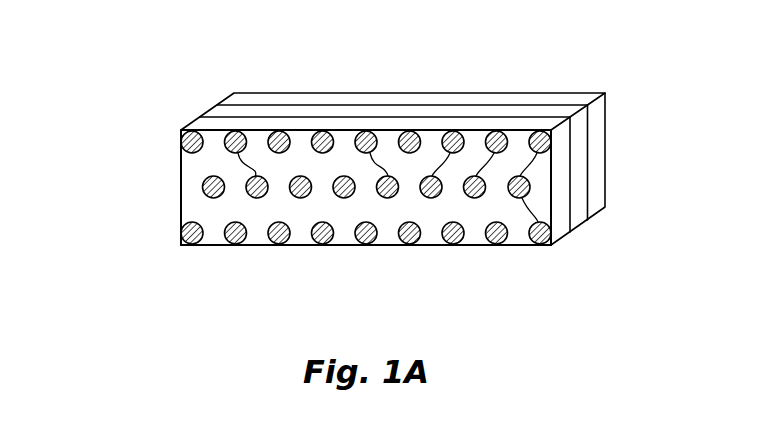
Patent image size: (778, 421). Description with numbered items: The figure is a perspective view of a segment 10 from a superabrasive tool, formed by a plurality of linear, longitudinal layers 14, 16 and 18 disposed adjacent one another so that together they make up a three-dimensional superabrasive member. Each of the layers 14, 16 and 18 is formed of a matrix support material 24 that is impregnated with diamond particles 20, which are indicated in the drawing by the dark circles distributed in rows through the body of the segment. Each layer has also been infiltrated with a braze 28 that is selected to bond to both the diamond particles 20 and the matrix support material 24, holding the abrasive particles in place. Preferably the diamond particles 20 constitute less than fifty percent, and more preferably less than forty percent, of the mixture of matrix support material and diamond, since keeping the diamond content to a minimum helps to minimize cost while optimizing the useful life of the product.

The segment 10 is at (136, 57).
The layer 14 is at (202, 122).
The layer 16 is at (577, 167).
The layer 18 is at (596, 112).
The diamond particles 20 is at (280, 131).
The matrix support material 24 is at (210, 245).
The braze 28 is at (551, 208).